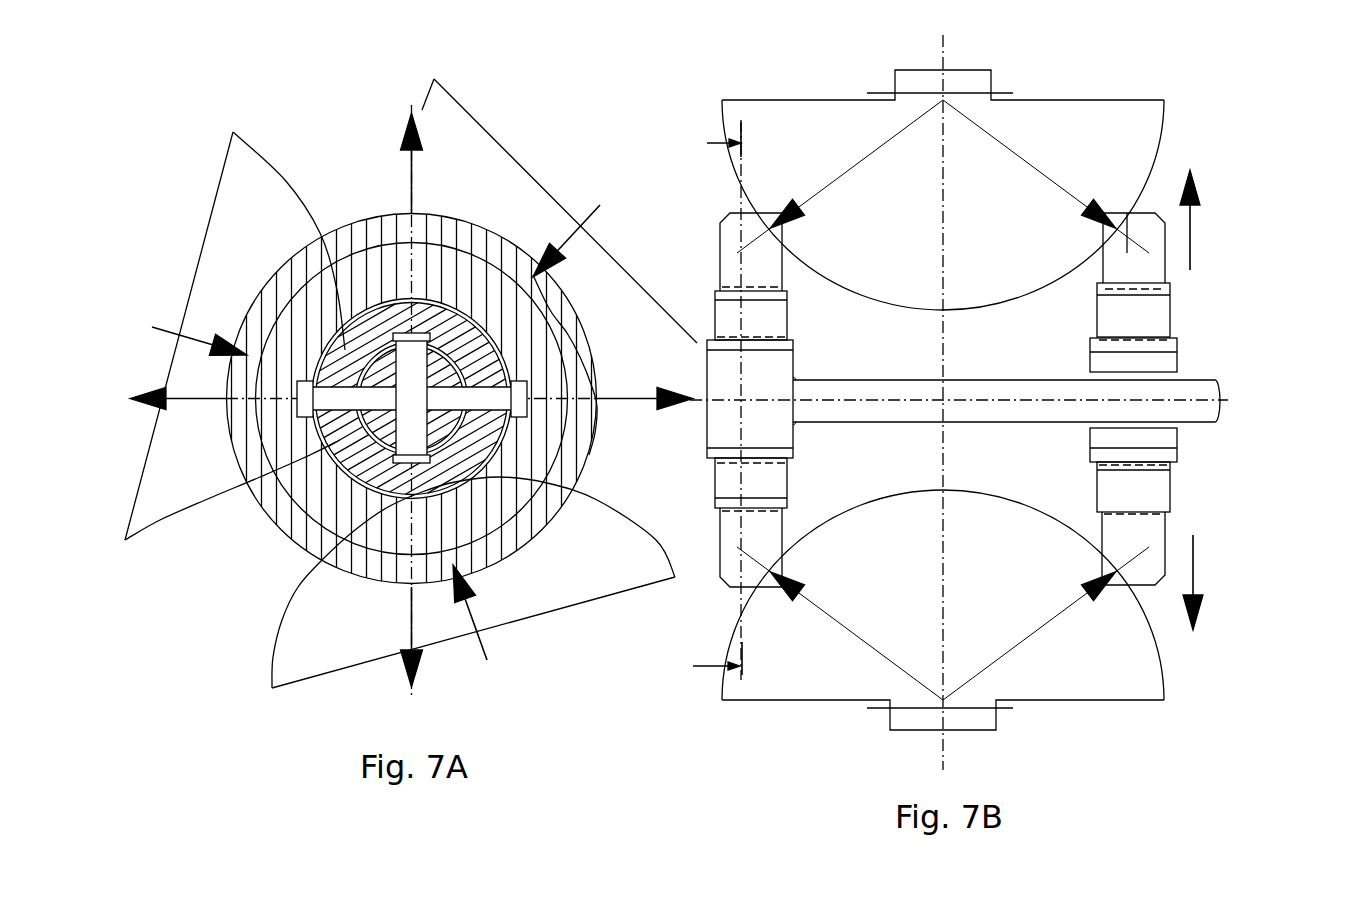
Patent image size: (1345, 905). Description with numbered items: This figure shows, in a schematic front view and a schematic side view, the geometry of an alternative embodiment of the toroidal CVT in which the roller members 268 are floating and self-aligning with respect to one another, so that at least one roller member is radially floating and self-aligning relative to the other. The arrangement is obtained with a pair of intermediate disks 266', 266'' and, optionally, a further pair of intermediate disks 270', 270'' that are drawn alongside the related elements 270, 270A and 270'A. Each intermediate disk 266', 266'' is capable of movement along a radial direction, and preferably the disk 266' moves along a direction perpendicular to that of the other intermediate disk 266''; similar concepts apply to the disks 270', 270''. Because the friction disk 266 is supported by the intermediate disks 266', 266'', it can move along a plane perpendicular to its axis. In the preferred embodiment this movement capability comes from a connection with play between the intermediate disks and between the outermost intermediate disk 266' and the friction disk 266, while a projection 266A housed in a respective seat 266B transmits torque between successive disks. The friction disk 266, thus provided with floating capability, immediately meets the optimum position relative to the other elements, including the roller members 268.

In FIG. 7A, the friction disk 266 is at (412, 356).
In FIG. 7B, the friction disk 266 is at (709, 435).
In FIG. 7A, the projection 266A is at (428, 326).
In FIG. 7B, the projection 266A is at (793, 449).
In FIG. 7A, the seat 266B is at (428, 326).
In FIG. 7B, the seat 266B is at (706, 468).
In FIG. 7A, the intermediate disk 266' is at (286, 436).
In FIG. 7B, the intermediate disk 266' is at (693, 482).
In FIG. 7A, the intermediate disk 266'' is at (379, 436).
In FIG. 7B, the intermediate disk 266'' is at (711, 377).
In FIG. 7A, the roller member 268 is at (255, 175).
In FIG. 7B, the roller member 268 is at (1095, 118).
In FIG. 7B, the bearing 270 is at (1208, 229).
In FIG. 7B, the intermediate disk 270' is at (1203, 287).
In FIG. 7B, the intermediate disk 270'' is at (1217, 329).
In FIG. 7B, the bearing collar 270A is at (1180, 457).
In FIG. 7B, the bearing 270'A is at (1209, 534).